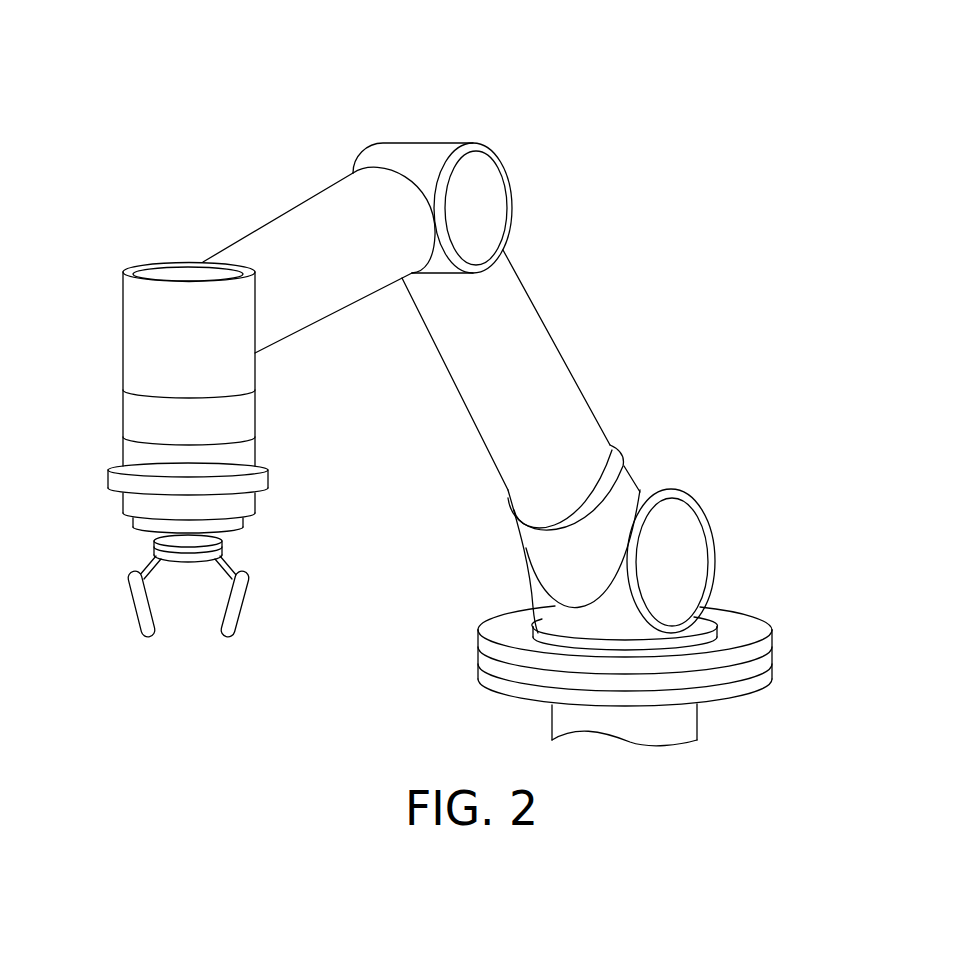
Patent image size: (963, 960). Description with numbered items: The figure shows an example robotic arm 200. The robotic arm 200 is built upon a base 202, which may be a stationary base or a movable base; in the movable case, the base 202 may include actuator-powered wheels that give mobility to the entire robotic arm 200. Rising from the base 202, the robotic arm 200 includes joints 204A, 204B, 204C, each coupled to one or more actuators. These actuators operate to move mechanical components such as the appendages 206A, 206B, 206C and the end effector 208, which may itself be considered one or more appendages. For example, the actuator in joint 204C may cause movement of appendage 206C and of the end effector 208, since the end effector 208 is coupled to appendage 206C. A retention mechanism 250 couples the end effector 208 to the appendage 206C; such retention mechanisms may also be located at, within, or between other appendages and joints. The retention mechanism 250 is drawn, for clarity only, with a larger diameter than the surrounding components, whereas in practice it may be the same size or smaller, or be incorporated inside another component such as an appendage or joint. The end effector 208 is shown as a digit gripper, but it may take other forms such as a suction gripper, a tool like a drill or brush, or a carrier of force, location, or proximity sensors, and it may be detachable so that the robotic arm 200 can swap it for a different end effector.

The robotic arm 200 is at (148, 86).
The base 202 is at (737, 635).
The joint 204A is at (673, 563).
The joint 204B is at (477, 206).
The joint 204C is at (138, 364).
The appendage 206A is at (563, 425).
The appendage 206B is at (313, 223).
The appendage 206C is at (240, 418).
The end effector 208 is at (280, 568).
The retention mechanism 250 is at (293, 478).